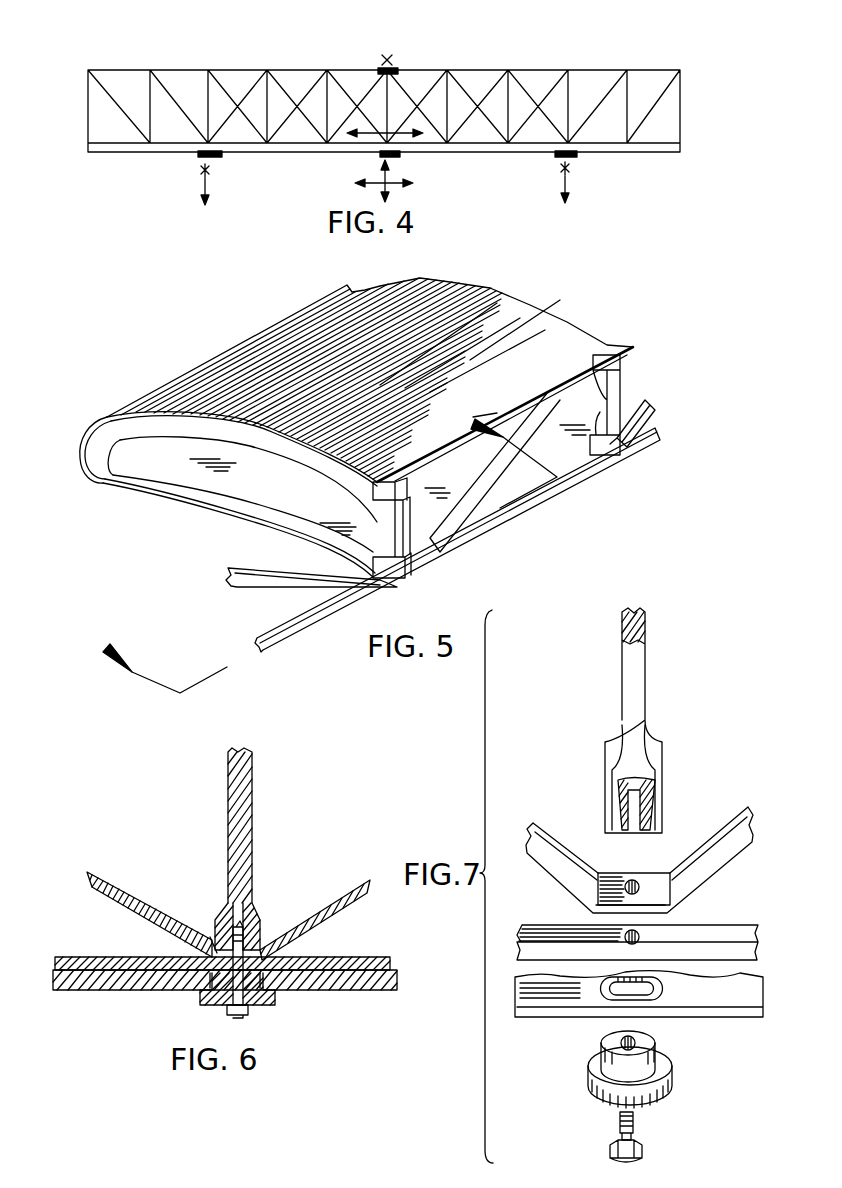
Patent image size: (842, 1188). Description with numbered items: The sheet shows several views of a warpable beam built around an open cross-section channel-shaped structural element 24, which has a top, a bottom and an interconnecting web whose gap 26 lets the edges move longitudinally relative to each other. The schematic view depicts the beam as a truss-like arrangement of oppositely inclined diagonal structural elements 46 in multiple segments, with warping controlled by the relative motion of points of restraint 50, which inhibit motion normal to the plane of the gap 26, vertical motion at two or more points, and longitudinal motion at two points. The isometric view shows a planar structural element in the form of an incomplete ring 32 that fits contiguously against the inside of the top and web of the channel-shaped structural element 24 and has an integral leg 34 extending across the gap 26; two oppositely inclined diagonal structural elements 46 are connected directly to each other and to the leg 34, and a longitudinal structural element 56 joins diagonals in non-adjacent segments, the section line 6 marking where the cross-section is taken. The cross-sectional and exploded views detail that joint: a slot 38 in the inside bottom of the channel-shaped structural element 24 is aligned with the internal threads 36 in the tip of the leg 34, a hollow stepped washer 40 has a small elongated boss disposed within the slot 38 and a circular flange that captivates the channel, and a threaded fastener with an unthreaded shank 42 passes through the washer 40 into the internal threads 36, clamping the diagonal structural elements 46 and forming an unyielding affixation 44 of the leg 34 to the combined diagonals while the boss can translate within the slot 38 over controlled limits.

In FIG. 5, the section line 6— 6 is at (320, 549).
In FIG. 5, the channel-shaped structural element 24 is at (532, 306).
In FIG. 6, the channel-shaped structural element 24 is at (347, 990).
In FIG. 7, the channel-shaped structural element 24 is at (558, 1018).
In FIG. 5, the gap 26 is at (490, 530).
In FIG. 5, the incomplete ring 32 is at (170, 413).
In FIG. 5, the leg 34 is at (618, 402).
In FIG. 6, the leg 34 is at (257, 815).
In FIG. 7, the leg 34 is at (647, 685).
In FIG. 6, the internal threads 36 is at (250, 913).
In FIG. 7, the internal threads 36 is at (652, 797).
In FIG. 6, the slot 38 is at (275, 988).
In FIG. 7, the slot 38 is at (662, 1000).
In FIG. 6, the hollow stepped washer 40 is at (257, 1007).
In FIG. 7, the hollow stepped washer 40 is at (672, 1087).
In FIG. 6, the threaded fastener with unthreaded shank 42 is at (227, 1010).
In FIG. 7, the threaded fastener with unthreaded shank 42 is at (622, 1140).
In FIG. 6, the unyielding affixation 44 is at (210, 937).
In FIG. 7, the unyielding affixation 44 is at (632, 873).
In FIG. 4, the diagonal structural elements 46 is at (493, 87).
In FIG. 5, the diagonal structural elements 46 is at (257, 568).
In FIG. 6, the diagonal structural elements 46 is at (123, 890).
In FIG. 7, the diagonal structural elements 46 is at (548, 833).
In FIG. 4, the points of restraint 50 is at (396, 69).
In FIG. 5, the longitudinal structural element 56 is at (293, 650).
In FIG. 6, the longitudinal structural element 56 is at (92, 955).
In FIG. 7, the longitudinal structural element 56 is at (558, 917).